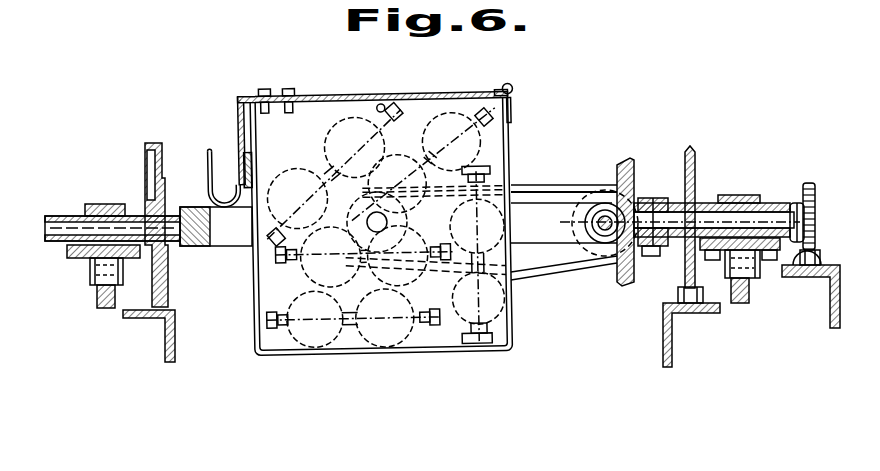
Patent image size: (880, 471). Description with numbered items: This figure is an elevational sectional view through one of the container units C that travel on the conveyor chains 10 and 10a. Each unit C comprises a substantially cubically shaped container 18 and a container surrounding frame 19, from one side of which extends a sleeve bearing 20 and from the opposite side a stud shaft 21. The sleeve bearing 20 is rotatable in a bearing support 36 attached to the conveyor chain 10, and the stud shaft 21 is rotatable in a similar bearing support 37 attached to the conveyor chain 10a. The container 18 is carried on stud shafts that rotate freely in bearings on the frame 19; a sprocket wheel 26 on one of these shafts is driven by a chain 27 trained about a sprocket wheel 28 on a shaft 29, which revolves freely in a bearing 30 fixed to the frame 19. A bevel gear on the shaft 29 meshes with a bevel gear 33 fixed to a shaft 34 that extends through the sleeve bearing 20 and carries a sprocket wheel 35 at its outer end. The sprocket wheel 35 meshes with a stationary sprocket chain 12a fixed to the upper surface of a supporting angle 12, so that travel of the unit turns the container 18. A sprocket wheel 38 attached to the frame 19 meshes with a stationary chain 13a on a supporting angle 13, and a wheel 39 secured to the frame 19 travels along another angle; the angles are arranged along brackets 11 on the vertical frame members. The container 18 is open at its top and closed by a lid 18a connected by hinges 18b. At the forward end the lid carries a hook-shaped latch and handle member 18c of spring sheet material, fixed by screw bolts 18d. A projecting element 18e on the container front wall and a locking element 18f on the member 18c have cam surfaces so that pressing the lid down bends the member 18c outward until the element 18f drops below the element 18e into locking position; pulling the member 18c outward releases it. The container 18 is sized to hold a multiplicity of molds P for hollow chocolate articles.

The conveyor chain 10 is at (755, 270).
The conveyor chain 10a is at (92, 272).
The bracket 11 is at (165, 345).
The supporting angle 12 is at (835, 320).
The sprocket chain 12a is at (795, 275).
The supporting angle 13 is at (665, 348).
The sprocket chain 13a is at (678, 295).
The container 18 is at (318, 353).
The lid 18a is at (428, 96).
The hinge 18b is at (509, 90).
The hook-shaped latch and handle member 18c is at (218, 152).
The screw bolt 18d is at (267, 87).
The projecting element 18e is at (257, 140).
The locking or latch element 18f is at (256, 182).
The container surrounding frame 19 is at (236, 246).
The sleeve bearing 20 is at (700, 203).
The stud shaft 21 is at (58, 216).
The sprocket wheel 26 is at (413, 227).
The chain 27 is at (528, 185).
The sprocket wheel 28 is at (580, 197).
The shaft 29 is at (598, 222).
The bearing 30 is at (600, 240).
The bevel gear 33 is at (620, 280).
The shaft 34 is at (660, 246).
The sprocket wheel 35 is at (808, 186).
The bearing support 36 is at (738, 196).
The bearing support 37 is at (112, 204).
The sprocket wheel 38 is at (695, 175).
The wheel 39 is at (156, 144).
The mold P is at (350, 122).
The container unit C is at (202, 51).